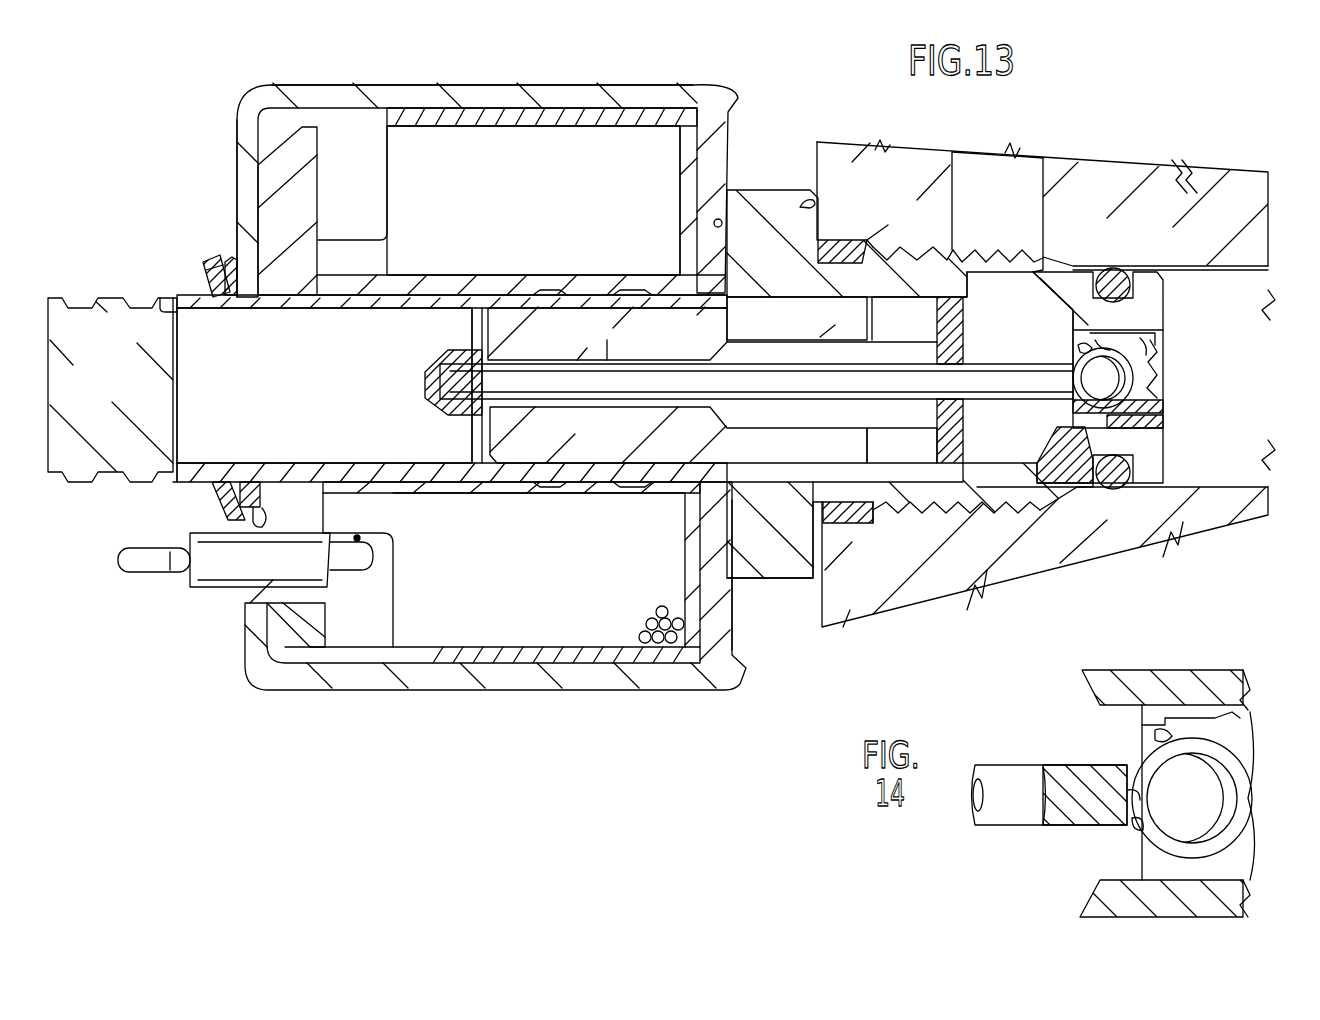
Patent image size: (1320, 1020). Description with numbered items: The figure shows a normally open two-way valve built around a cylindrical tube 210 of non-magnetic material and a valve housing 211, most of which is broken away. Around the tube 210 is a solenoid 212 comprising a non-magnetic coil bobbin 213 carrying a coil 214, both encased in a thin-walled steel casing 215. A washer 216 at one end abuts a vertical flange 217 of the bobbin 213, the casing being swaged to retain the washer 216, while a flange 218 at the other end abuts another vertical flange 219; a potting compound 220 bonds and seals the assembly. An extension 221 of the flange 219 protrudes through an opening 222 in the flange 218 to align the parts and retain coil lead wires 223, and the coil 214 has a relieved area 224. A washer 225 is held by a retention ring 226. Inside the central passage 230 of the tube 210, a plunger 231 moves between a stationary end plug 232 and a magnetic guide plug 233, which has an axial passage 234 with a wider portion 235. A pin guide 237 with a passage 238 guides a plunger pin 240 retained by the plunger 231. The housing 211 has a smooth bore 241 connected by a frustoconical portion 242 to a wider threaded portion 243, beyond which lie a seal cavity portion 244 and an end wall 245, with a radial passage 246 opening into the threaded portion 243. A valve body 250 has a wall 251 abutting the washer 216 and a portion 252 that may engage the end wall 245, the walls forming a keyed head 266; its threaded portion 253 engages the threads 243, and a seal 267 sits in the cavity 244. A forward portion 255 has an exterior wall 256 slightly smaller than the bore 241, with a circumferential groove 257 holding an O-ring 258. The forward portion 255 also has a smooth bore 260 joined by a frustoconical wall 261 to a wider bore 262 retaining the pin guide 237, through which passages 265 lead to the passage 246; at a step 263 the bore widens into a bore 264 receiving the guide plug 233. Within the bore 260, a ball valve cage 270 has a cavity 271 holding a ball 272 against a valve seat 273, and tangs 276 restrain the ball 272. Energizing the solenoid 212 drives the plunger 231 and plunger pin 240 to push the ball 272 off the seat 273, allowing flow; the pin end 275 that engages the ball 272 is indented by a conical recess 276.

In FIG. 13, the cylindrical tube 210 is at (95, 300).
In FIG. 13, the valve housing 211 is at (855, 150).
In FIG. 13, the solenoid 212 is at (400, 697).
In FIG. 13, the coil bobbin 213 is at (645, 493).
In FIG. 13, the coil 214 is at (535, 170).
In FIG. 13, the casing 215 is at (348, 100).
In FIG. 13, the washer 216 is at (735, 625).
In FIG. 13, the vertical flange 217 is at (690, 553).
In FIG. 13, the casing flange 218 is at (235, 168).
In FIG. 13, the vertical flange 219 is at (310, 180).
In FIG. 13, the potting compound 220 is at (510, 110).
In FIG. 13, the extension 221 is at (240, 590).
In FIG. 13, the opening 222 is at (262, 520).
In FIG. 13, the coil lead wires 223 is at (170, 575).
In FIG. 13, the recess 224 is at (375, 623).
In FIG. 13, the washer 225 is at (232, 255).
In FIG. 13, the retention ring 226 is at (203, 265).
In FIG. 13, the central passage 230 is at (160, 314).
In FIG. 13, the plunger 231 is at (323, 391).
In FIG. 13, the end plug 232 is at (128, 391).
In FIG. 13, the guide plug 233 is at (618, 438).
In FIG. 13, the axial passage 234 is at (600, 360).
In FIG. 13, the wider portion 235 is at (645, 362).
In FIG. 13, the pin guide 237 is at (937, 350).
In FIG. 13, the passage 238 is at (937, 405).
In FIG. 13, the plunger pin 240 is at (756, 381).
In FIG. 14, the plunger pin 240 is at (1018, 775).
In FIG. 13, the cylindrical bore 241 is at (1185, 488).
In FIG. 13, the sleeve wall 242 is at (1065, 268).
In FIG. 13, the threaded portion 243 is at (975, 248).
In FIG. 13, the seal cavity portion 244 is at (845, 525).
In FIG. 13, the end wall 245 is at (812, 202).
In FIG. 13, the radial passage 246 is at (985, 160).
In FIG. 13, the valve body 250 is at (745, 195).
In FIG. 13, the wall 251 is at (722, 223).
In FIG. 13, the portion 252 is at (818, 244).
In FIG. 13, the threaded portion 253 is at (938, 246).
In FIG. 13, the forward portion 255 is at (1163, 302).
In FIG. 14, the forward portion 255 is at (1195, 680).
In FIG. 13, the exterior wall 256 is at (1135, 490).
In FIG. 13, the circumferential groove 257 is at (1135, 470).
In FIG. 13, the O-ring 258 is at (1118, 268).
In FIG. 13, the cylindrical bore 260 is at (1163, 425).
In FIG. 13, the frustoconical wall 261 is at (1045, 460).
In FIG. 13, the cylindrical bore 262 is at (937, 443).
In FIG. 13, the step 263 is at (925, 312).
In FIG. 13, the bore 264 is at (867, 322).
In FIG. 13, the passages 265 is at (1000, 300).
In FIG. 13, the keyed head 266 is at (778, 575).
In FIG. 13, the seal 267 is at (835, 245).
In FIG. 13, the ball valve cage 270 is at (1163, 407).
In FIG. 13, the cavity 271 is at (1118, 347).
In FIG. 14, the cavity 271 is at (1240, 715).
In FIG. 13, the ball 272 is at (1118, 388).
In FIG. 14, the ball 272 is at (1190, 778).
In FIG. 13, the valve seat 273 is at (1075, 350).
In FIG. 14, the valve seat 273 is at (1152, 736).
In FIG. 14, the end 275 is at (1130, 830).
In FIG. 13, the tangs 276 is at (1158, 357).
In FIG. 14, the tangs 276 is at (1142, 798).